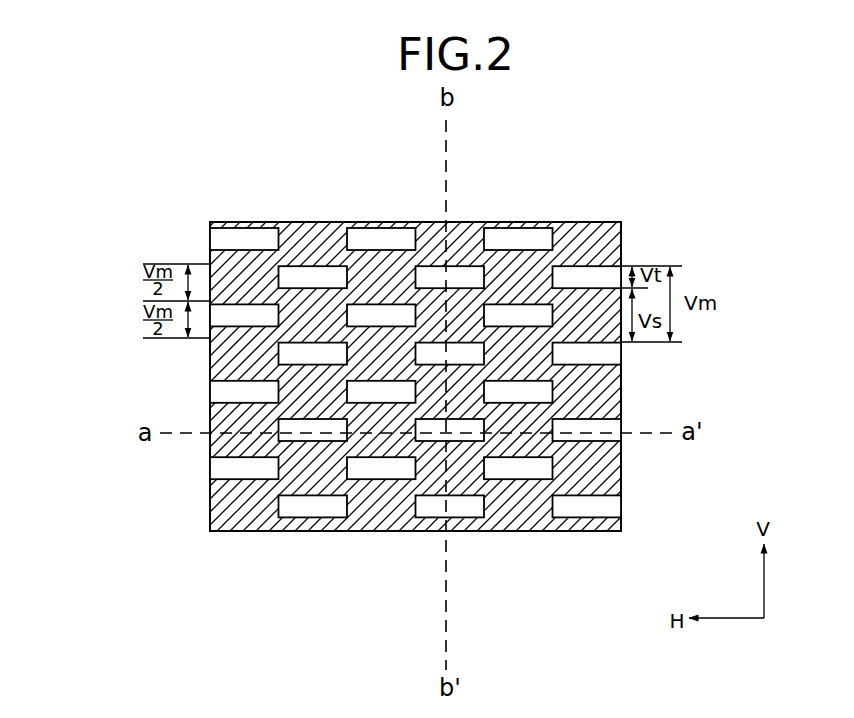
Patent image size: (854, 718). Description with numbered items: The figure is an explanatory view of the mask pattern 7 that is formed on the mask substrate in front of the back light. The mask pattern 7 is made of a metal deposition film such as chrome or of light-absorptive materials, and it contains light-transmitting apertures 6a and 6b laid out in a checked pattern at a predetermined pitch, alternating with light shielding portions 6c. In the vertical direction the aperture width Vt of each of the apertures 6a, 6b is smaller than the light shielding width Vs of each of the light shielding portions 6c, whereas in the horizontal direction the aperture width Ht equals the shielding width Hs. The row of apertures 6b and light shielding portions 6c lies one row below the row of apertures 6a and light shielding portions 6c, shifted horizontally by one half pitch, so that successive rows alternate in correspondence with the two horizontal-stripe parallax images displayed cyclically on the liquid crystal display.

The mask pattern 7 is at (597, 222).
The apertures 6a is at (467, 272).
The apertures 6b is at (220, 478).
The light shielding portions 6c is at (598, 328).